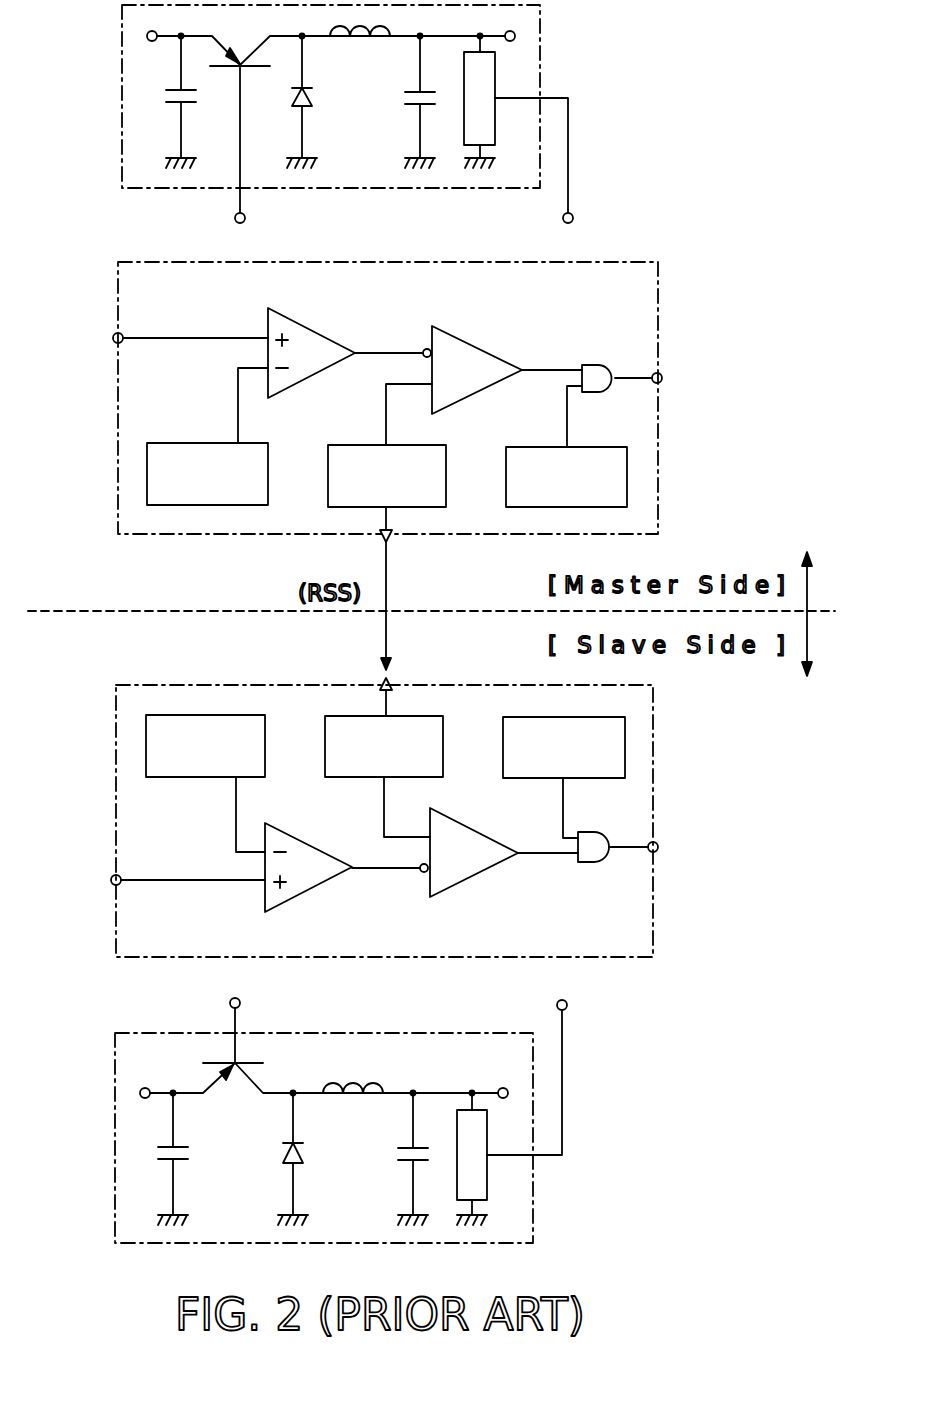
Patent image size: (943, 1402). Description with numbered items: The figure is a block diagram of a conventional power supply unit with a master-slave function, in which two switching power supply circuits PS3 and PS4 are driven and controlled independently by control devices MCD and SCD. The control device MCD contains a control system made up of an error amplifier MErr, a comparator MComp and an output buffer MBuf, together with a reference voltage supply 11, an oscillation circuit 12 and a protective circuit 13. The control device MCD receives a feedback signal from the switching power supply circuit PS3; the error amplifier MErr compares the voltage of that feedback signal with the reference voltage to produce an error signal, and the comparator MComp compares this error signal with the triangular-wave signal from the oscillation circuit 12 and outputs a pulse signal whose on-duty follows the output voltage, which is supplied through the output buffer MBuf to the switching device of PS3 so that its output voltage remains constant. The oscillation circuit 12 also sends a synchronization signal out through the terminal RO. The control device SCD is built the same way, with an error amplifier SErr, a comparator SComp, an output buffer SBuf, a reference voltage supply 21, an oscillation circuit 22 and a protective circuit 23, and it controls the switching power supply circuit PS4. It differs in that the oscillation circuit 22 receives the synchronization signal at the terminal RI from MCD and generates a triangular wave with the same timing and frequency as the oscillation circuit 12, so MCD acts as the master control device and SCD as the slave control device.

The reference voltage supply 11 is at (168, 440).
The oscillation circuit 12 is at (350, 440).
The protective circuit 13 is at (531, 442).
The reference voltage supply 21 is at (171, 783).
The oscillation circuit 22 is at (345, 785).
The protective circuit 23 is at (530, 797).
The switching power supply circuit PS3 is at (553, 53).
The switching power supply circuit PS4 is at (545, 1195).
The control device MCD is at (382, 398).
The control device SCD is at (379, 821).
The error amplifier MErr is at (262, 315).
The comparator MComp is at (478, 337).
The output buffer MBuf is at (603, 354).
The error amplifier SErr is at (258, 906).
The comparator SComp is at (470, 887).
The output buffer SBuf is at (594, 870).
The reference output terminal RO is at (407, 588).
The reference input terminal RI is at (401, 680).